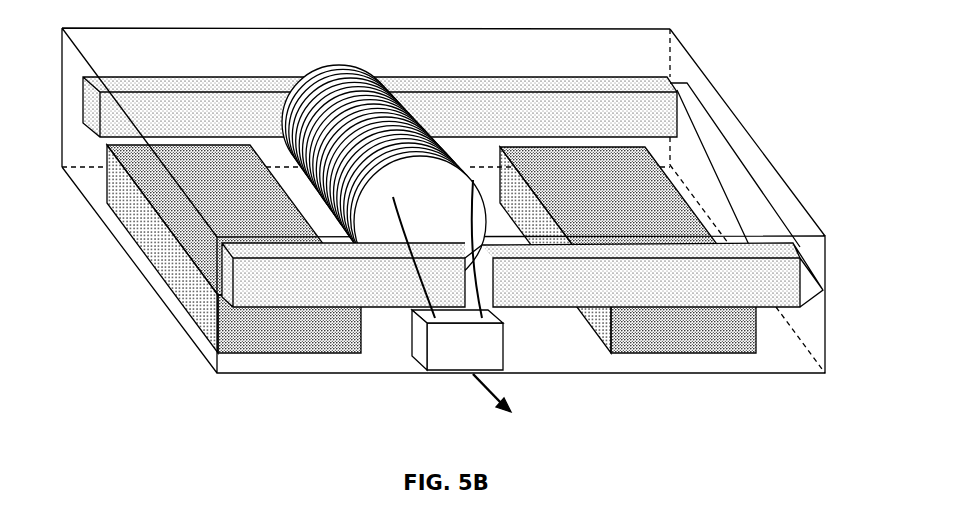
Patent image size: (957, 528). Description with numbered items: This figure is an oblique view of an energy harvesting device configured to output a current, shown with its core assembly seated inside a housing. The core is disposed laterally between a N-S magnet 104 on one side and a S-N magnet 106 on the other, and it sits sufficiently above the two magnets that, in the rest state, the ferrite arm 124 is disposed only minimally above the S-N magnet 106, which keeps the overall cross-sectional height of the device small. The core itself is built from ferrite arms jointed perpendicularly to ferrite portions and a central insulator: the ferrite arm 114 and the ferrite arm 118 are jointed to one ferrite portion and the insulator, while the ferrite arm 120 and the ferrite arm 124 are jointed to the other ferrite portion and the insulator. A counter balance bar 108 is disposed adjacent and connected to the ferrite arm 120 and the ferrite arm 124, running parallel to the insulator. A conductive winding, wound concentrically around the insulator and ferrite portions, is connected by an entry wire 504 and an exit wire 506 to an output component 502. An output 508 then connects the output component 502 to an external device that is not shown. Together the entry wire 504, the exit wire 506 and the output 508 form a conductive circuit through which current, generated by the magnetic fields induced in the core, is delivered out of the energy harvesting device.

The N-S magnet 104 is at (252, 206).
The S-N magnet 106 is at (622, 204).
The counter balance bar 108 is at (720, 176).
The ferrite arm 114 is at (180, 124).
The ferrite arm 120 is at (603, 124).
The ferrite arm 118 is at (304, 299).
The ferrite arm 124 is at (727, 301).
The output component 502 is at (487, 354).
The entry wire 504 is at (410, 265).
The exit wire 506 is at (470, 220).
The output 508 is at (472, 397).